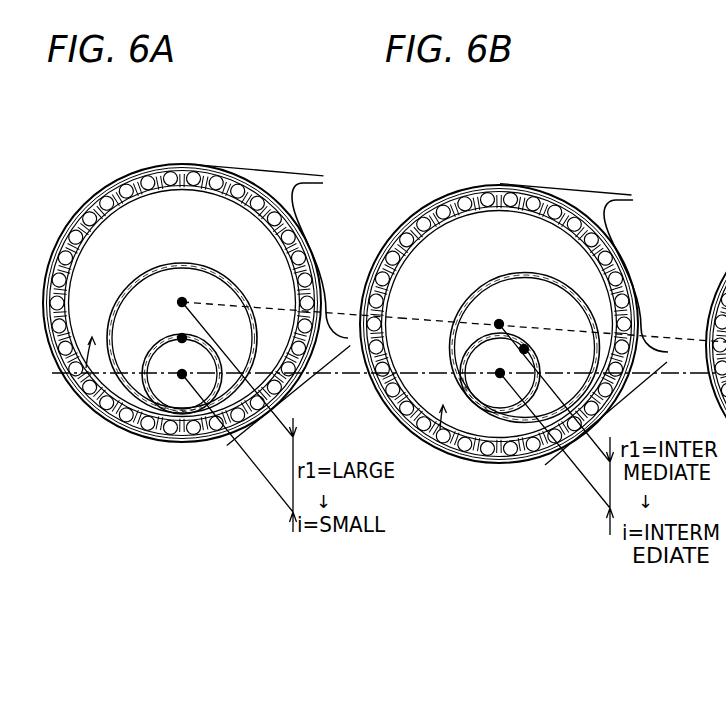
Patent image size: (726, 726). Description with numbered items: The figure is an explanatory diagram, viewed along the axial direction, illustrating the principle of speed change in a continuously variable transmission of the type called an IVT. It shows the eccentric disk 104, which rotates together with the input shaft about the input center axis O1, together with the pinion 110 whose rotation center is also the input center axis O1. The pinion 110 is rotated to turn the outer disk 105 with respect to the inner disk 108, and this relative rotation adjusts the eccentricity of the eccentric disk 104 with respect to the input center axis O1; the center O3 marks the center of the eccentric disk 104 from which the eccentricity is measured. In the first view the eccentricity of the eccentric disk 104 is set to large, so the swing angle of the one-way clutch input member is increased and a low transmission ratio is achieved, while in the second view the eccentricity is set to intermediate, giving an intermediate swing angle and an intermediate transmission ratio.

In FIG. 6A, the eccentric disk 104 is at (70, 382).
In FIG. 6B, the eccentric disk 104 is at (430, 442).
In FIG. 6A, the outer disk 105 is at (172, 207).
In FIG. 6B, the outer disk 105 is at (488, 227).
In FIG. 6A, the inner disk 108 is at (203, 288).
In FIG. 6B, the inner disk 108 is at (520, 310).
In FIG. 6A, the pinion 110 is at (193, 438).
In FIG. 6B, the pinion 110 is at (507, 462).
In FIG. 6A, the input center axis O1 is at (131, 430).
In FIG. 6B, the input center axis O1 is at (496, 428).
In FIG. 6A, the center of outer ring O3 is at (182, 302).
In FIG. 6B, the center of outer ring O3 is at (499, 324).